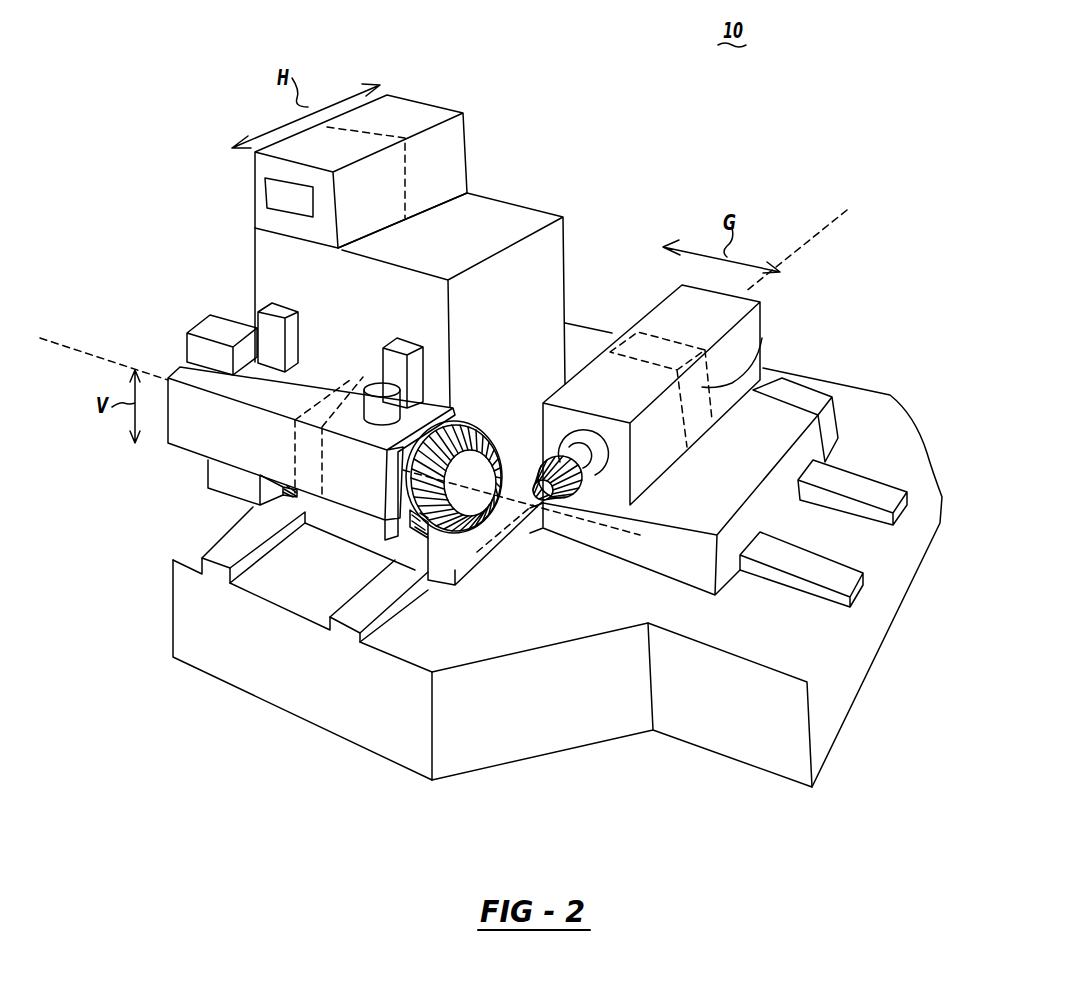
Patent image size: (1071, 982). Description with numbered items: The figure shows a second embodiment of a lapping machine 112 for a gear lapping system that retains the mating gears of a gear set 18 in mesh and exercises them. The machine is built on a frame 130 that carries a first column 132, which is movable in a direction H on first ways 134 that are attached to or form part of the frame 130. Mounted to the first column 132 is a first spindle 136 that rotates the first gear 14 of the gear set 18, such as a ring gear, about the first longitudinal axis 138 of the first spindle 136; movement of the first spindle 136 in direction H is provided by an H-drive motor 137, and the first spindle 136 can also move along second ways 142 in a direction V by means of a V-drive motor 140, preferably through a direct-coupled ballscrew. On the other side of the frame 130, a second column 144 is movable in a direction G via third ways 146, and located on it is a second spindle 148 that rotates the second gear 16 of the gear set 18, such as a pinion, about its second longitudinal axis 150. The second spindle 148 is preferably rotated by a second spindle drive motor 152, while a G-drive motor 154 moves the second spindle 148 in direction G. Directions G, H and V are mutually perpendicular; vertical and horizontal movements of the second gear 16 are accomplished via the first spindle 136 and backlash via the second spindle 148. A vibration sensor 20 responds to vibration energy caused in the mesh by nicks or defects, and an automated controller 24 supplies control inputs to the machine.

The first gear 14 is at (435, 527).
The second gear 16 is at (576, 490).
The gear set 18 is at (485, 425).
The vibration sensor 20 is at (377, 415).
The automated controller 24 is at (448, 147).
The lapping machine 112 is at (532, 172).
The frame 130 is at (507, 728).
The first column 132 is at (520, 223).
The first ways 134 is at (203, 530).
The first spindle 136 is at (173, 447).
The H-drive motor 137 is at (223, 478).
The first longitudinal axis 138 is at (97, 363).
The V-drive motor 140 is at (227, 327).
The second ways 142 is at (243, 317).
The second column 144 is at (765, 423).
The third ways 146 is at (850, 482).
The second spindle 148 is at (645, 310).
The second longitudinal axis 150 is at (835, 218).
The second spindle drive motor 152 is at (762, 338).
The G-drive motor 154 is at (825, 398).